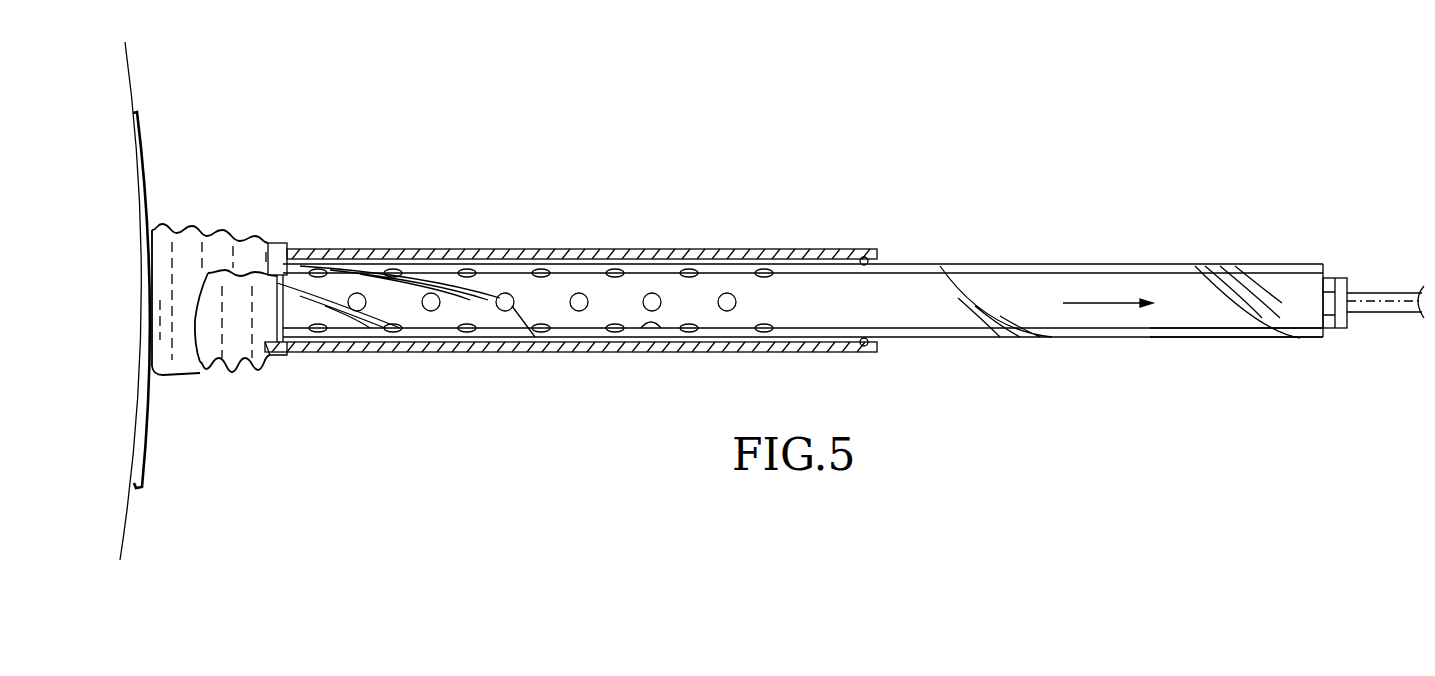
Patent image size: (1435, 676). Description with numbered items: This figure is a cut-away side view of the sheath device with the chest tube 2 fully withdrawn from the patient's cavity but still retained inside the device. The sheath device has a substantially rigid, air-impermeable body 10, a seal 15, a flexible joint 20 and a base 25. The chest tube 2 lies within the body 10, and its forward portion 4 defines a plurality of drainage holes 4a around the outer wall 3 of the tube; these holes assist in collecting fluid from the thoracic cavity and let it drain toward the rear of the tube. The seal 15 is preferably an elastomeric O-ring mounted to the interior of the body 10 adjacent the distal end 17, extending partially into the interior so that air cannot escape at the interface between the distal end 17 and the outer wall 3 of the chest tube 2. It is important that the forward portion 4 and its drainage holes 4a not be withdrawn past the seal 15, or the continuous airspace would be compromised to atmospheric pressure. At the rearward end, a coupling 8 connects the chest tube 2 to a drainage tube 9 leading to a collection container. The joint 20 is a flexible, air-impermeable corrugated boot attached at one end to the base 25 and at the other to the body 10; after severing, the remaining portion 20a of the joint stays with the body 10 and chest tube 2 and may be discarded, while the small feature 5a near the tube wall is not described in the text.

The chest tube 2 is at (1024, 258).
The outer wall 3 is at (1232, 313).
The forward portion 4 is at (595, 290).
The drainage holes 4a is at (430, 312).
The opening 5a is at (660, 332).
The coupling 8 is at (1340, 283).
The drainage tube 9 is at (1381, 297).
The body 10 is at (475, 248).
The seal 15 is at (864, 256).
The distal end 17 is at (878, 347).
The joint 20 is at (207, 206).
The remaining portion 20a is at (232, 230).
The base 25 is at (146, 443).